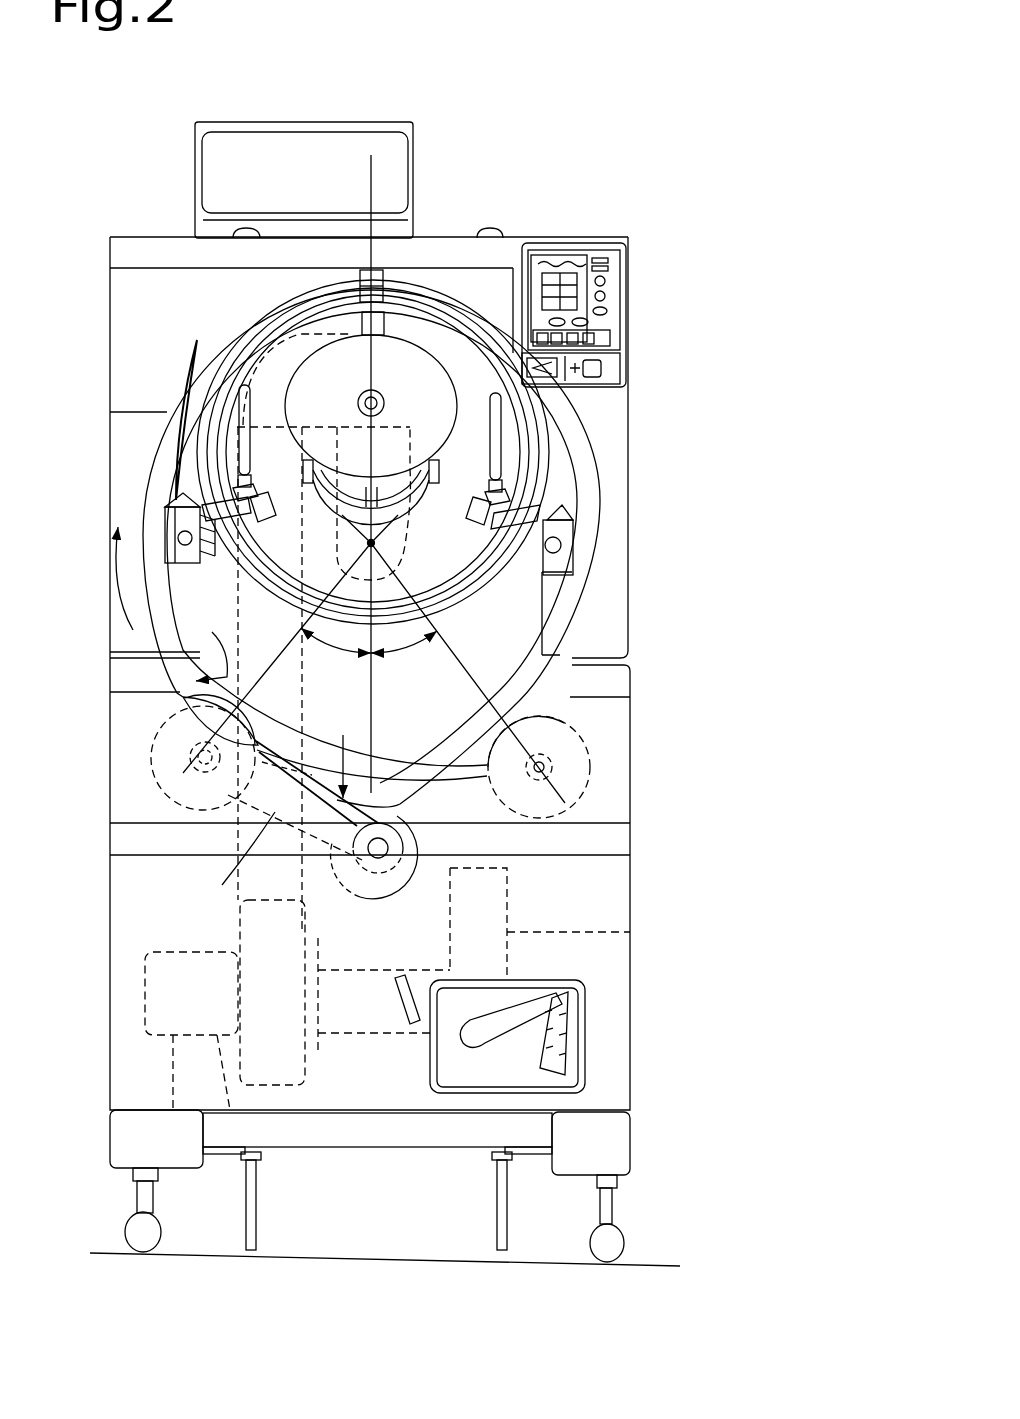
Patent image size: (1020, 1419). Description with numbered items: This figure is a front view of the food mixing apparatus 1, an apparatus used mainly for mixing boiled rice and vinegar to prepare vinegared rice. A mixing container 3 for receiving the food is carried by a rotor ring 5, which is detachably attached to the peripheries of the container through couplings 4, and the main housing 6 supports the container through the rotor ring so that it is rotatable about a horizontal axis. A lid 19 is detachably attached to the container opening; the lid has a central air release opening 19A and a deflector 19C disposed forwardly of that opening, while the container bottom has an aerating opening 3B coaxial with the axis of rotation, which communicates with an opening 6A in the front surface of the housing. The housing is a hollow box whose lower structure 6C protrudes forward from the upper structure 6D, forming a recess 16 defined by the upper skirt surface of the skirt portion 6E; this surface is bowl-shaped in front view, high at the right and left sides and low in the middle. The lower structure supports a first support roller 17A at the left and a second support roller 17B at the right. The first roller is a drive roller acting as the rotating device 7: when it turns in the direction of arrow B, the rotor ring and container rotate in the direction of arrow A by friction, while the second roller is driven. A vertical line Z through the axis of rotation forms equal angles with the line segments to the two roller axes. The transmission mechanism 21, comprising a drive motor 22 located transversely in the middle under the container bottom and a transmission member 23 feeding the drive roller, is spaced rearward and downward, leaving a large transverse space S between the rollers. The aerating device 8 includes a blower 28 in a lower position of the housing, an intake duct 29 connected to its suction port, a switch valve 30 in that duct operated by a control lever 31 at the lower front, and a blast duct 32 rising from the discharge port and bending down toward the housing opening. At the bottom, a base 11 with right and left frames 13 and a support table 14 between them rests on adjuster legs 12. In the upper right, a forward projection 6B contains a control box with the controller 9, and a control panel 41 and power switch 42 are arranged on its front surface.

The food mixing apparatus 1 is at (637, 208).
The vertical line Z is at (368, 180).
The controller 9 is at (615, 292).
The control panel 41 is at (594, 257).
The forward projection 6B is at (630, 338).
The power switch 42 is at (605, 368).
The upper structure 6D is at (130, 360).
The deflector 19C is at (313, 370).
The air release opening 19A is at (398, 475).
The lid 19 is at (510, 443).
The couplings 4 is at (570, 543).
The recess 16 is at (143, 480).
The rotor ring 5 is at (587, 468).
The mixing container 3 is at (542, 615).
The opening 6A is at (430, 507).
The aerating opening 3B is at (356, 496).
The blast duct 32 is at (303, 677).
The transverse space S is at (336, 748).
The lower structure 6C is at (128, 726).
The main housing 6 is at (640, 689).
The first support roller 17A is at (152, 776).
The second support roller 17B is at (588, 783).
The skirt portion 6E is at (437, 797).
The rotating device 7 is at (205, 831).
The transmission member 23 is at (273, 813).
The transmission mechanism 21 is at (291, 836).
The drive motor 22 is at (415, 862).
The intake duct 29 is at (630, 935).
The control lever 31 is at (530, 985).
The switch valve 30 is at (398, 1025).
The aerating device 8 is at (328, 1077).
The blower 28 is at (293, 1085).
The base 11 is at (639, 1118).
The right and left frames 13 is at (623, 1155).
The adjuster legs 12 is at (607, 1213).
The support table 14 is at (448, 1137).
The arrow A is at (132, 613).
The arrow B is at (211, 639).